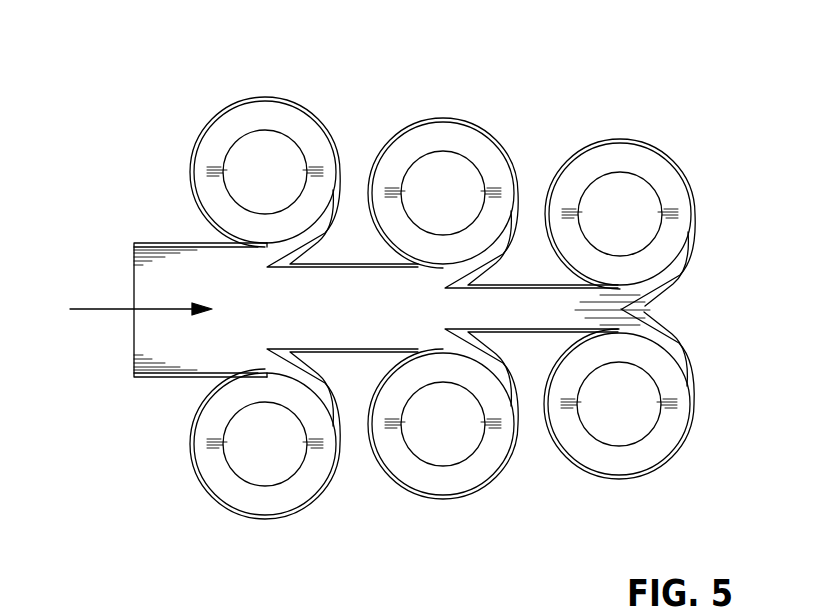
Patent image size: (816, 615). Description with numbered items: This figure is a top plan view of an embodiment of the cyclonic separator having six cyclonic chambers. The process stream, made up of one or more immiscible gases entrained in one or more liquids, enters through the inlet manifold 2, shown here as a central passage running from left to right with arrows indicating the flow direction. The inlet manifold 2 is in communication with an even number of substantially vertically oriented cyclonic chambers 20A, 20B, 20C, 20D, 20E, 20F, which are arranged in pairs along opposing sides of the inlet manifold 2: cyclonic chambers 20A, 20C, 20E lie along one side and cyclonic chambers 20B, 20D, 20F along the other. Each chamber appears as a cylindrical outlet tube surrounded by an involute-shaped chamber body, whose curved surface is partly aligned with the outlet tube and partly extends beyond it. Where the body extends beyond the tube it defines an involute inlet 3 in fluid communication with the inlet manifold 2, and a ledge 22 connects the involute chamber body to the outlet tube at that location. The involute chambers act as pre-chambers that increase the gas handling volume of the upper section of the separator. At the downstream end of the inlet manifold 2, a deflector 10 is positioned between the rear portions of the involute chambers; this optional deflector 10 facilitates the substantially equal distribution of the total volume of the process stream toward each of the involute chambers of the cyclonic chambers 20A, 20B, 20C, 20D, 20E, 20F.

The inlet manifold 2 is at (112, 337).
The involute inlet 3 is at (255, 260).
The deflector 10 is at (640, 308).
The cyclonic chamber 20A is at (258, 99).
The cyclonic chamber 20B is at (265, 519).
The cyclonic chamber 20C is at (440, 119).
The cyclonic chamber 20D is at (443, 499).
The cyclonic chamber 20E is at (617, 140).
The cyclonic chamber 20F is at (618, 479).
The ledge 22 is at (255, 362).